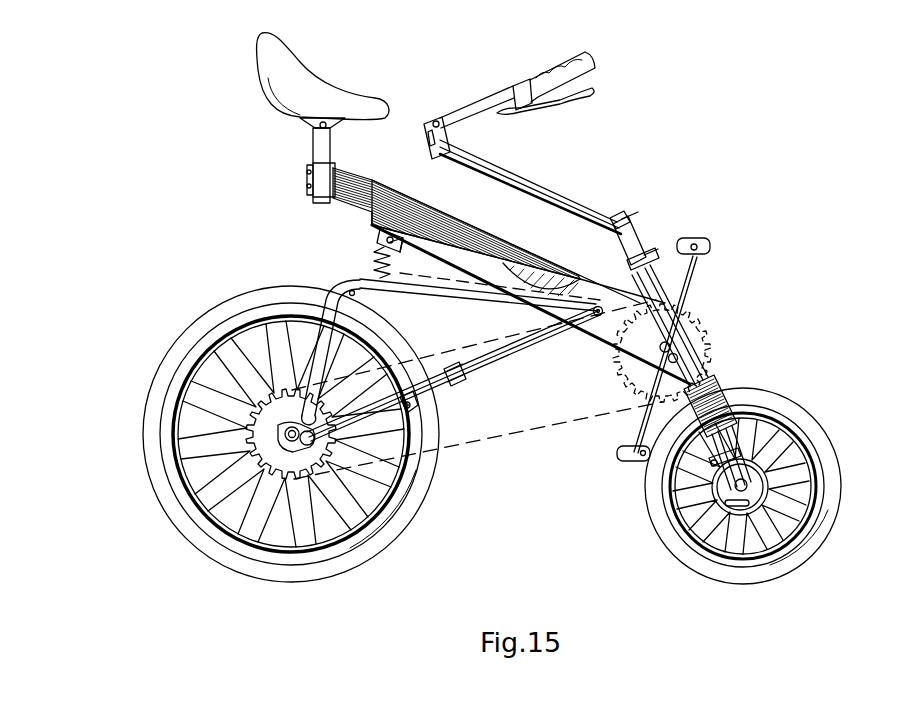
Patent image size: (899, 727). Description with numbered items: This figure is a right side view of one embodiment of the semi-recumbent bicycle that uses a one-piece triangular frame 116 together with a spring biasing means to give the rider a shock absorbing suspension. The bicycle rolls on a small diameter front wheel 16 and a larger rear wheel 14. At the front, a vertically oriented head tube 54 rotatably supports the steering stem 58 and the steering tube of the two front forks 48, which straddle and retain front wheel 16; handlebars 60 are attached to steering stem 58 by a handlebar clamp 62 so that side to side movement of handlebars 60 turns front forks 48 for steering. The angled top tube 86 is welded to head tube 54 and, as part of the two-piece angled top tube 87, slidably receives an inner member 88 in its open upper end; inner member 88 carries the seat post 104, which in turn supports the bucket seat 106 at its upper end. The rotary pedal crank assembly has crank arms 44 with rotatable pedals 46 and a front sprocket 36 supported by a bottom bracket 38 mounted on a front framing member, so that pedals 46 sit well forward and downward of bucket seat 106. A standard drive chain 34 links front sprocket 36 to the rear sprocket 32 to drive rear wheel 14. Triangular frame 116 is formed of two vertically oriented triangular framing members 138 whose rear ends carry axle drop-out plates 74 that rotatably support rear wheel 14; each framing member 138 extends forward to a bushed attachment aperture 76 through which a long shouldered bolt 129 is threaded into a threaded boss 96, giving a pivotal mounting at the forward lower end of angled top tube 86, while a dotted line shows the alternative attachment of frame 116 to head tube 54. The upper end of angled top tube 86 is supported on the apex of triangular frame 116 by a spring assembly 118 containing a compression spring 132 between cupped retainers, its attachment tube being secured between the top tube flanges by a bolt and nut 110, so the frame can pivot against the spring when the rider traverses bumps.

The rear wheel 14 is at (192, 532).
The front wheel 16 is at (830, 455).
The rear sprocket 32 is at (253, 435).
The drive chain 34 is at (529, 428).
The front sprocket 36 is at (690, 308).
The bottom bracket 38 is at (669, 345).
The crank arms 44 is at (698, 265).
The pedals 46 is at (688, 238).
The front forks 48 is at (743, 447).
The head tube 54 is at (650, 262).
The steering stem 58 is at (547, 193).
The handlebars 60 is at (488, 97).
The handlebar clamp 62 is at (433, 120).
The axle drop-out plates 74 is at (283, 403).
The bushed attachment aperture 76 is at (668, 297).
The angled top tube 86 is at (448, 222).
The two-piece angled top tube 87 is at (380, 180).
The inner member 88 is at (347, 177).
The threaded boss 96 is at (678, 357).
The seat post 104 is at (318, 150).
The bucket seat 106 is at (266, 52).
The nut 110 is at (398, 250).
The one-piece triangular frame 116 is at (597, 302).
The spring assembly 118 is at (375, 247).
The long shouldered bolt 129 is at (575, 328).
The compression spring 132 is at (370, 258).
The triangular framing member 138 is at (362, 308).